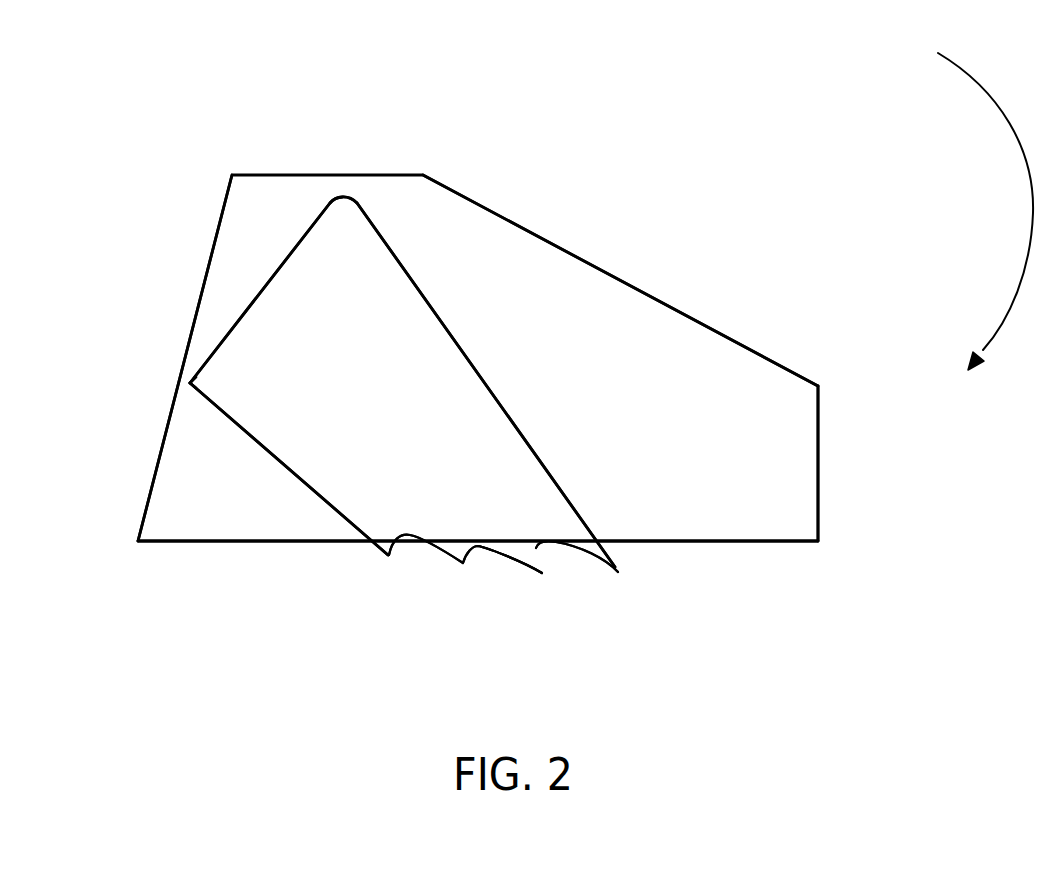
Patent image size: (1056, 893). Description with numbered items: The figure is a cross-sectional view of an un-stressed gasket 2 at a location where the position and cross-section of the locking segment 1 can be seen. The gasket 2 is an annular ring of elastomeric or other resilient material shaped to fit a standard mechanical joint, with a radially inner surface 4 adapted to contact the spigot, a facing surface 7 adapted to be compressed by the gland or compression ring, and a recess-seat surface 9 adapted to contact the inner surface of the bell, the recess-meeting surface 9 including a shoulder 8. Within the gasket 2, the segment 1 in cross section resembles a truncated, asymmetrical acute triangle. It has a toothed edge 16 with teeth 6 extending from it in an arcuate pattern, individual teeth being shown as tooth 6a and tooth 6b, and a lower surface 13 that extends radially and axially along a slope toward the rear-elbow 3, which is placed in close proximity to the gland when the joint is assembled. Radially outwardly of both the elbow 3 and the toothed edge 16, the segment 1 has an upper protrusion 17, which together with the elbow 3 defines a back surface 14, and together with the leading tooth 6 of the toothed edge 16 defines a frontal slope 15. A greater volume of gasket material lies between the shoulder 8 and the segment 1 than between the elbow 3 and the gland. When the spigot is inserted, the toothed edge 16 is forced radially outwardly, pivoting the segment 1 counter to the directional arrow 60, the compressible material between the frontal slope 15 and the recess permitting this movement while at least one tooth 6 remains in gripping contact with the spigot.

The locking segment 1 is at (345, 433).
The gasket 2 is at (725, 362).
The rear-elbow 3 is at (191, 384).
The radially inner surface 4 is at (713, 542).
The teeth 6 is at (542, 573).
The serration flank 6a is at (619, 573).
The serration flank 6b is at (542, 573).
The facing surface 7 is at (167, 428).
The shoulder 8 is at (818, 460).
The recess-seat surface 9 is at (537, 232).
The lower surface 13 is at (267, 462).
The back surface 14 is at (248, 302).
The frontal slope 15 is at (485, 378).
The toothed edge 16 is at (457, 535).
The upper protrusion 17 is at (340, 199).
The directional arrow 60 is at (1033, 213).